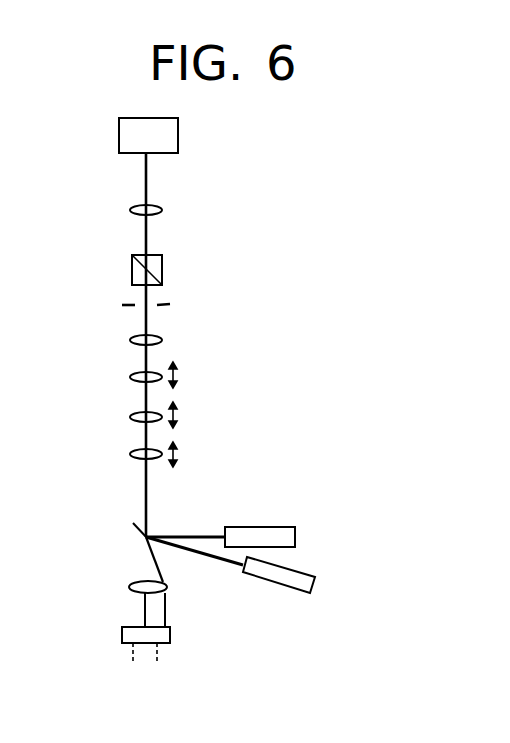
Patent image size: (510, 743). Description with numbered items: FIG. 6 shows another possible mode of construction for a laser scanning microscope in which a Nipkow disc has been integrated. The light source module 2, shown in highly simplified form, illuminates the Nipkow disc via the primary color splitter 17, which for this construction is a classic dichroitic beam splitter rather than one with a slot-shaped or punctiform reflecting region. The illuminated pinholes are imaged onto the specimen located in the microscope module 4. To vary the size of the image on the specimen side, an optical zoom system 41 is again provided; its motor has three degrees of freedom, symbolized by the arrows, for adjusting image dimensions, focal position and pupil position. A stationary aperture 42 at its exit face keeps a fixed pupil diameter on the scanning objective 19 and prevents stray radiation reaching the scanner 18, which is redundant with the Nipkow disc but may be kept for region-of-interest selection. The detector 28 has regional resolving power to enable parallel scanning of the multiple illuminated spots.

The microscope module 4 is at (119, 130).
The scanning objective 19 is at (163, 208).
The scanner 18 is at (162, 265).
The aperture 42 is at (170, 304).
The optical zoom system 41 is at (216, 333).
The primary color splitter 17 is at (141, 530).
The light source module 2 is at (340, 548).
The detector 28 is at (170, 637).